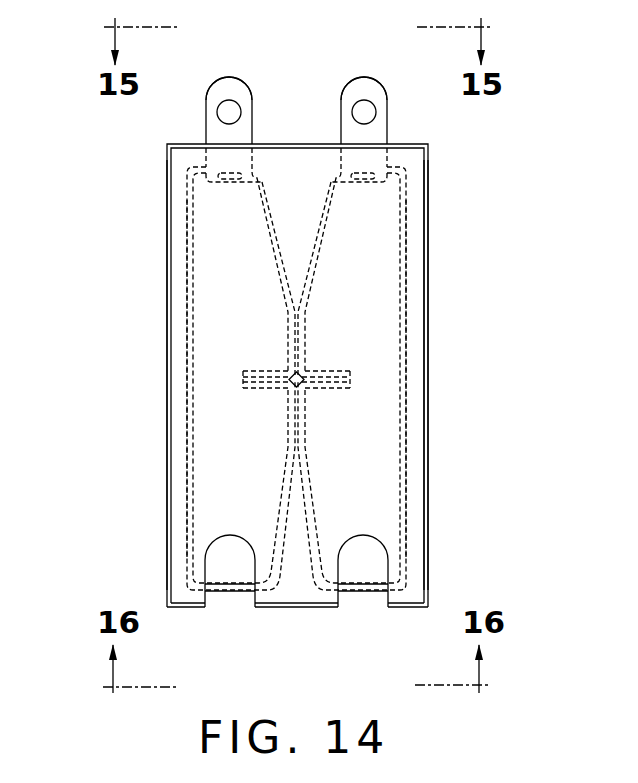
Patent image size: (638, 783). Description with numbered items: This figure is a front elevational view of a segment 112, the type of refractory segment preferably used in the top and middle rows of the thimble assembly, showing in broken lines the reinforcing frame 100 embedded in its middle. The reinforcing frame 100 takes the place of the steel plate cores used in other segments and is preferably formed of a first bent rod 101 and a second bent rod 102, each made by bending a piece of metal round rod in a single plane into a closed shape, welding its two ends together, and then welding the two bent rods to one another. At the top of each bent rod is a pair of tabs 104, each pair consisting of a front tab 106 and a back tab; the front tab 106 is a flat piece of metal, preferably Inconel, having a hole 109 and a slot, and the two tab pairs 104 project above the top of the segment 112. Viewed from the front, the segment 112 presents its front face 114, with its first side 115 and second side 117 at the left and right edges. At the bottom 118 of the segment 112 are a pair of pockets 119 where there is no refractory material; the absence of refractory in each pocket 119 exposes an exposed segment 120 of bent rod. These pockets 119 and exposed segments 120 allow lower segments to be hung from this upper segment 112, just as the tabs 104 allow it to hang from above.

The reinforcing frame 100 is at (402, 355).
The first bent rod 101 is at (402, 320).
The second bent rod 102 is at (190, 303).
The tabs 104 is at (247, 87).
The front tab 106 is at (225, 93).
The hole 109 is at (228, 113).
The segment 112 is at (365, 214).
The front face 114 is at (372, 262).
The first side 115 is at (428, 395).
The second side 117 is at (167, 357).
The bottom 118 is at (192, 607).
The pockets 119 is at (236, 603).
The exposed segment 120 is at (221, 593).